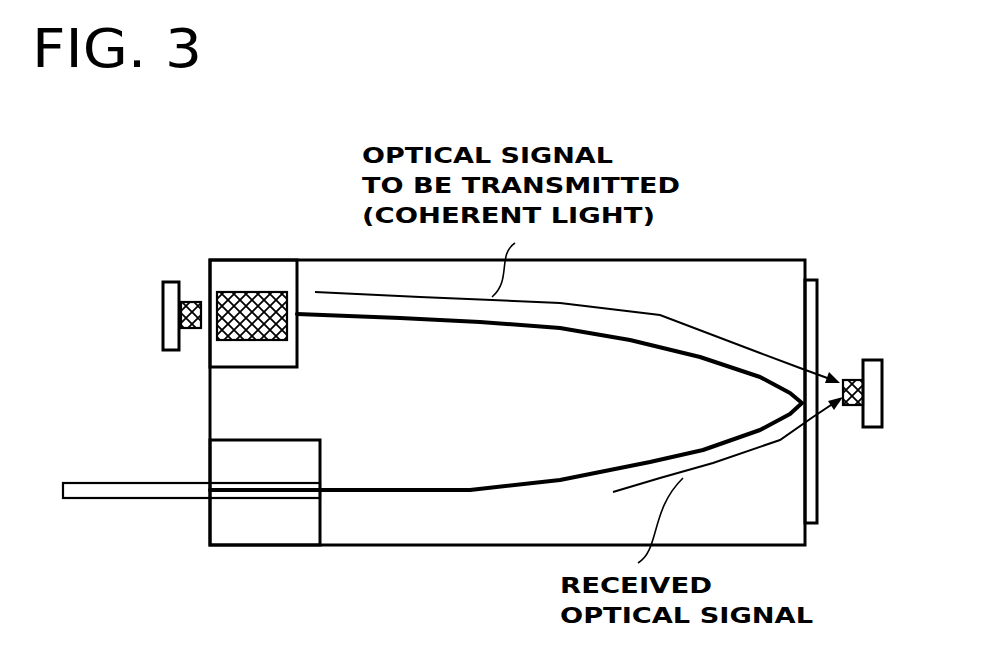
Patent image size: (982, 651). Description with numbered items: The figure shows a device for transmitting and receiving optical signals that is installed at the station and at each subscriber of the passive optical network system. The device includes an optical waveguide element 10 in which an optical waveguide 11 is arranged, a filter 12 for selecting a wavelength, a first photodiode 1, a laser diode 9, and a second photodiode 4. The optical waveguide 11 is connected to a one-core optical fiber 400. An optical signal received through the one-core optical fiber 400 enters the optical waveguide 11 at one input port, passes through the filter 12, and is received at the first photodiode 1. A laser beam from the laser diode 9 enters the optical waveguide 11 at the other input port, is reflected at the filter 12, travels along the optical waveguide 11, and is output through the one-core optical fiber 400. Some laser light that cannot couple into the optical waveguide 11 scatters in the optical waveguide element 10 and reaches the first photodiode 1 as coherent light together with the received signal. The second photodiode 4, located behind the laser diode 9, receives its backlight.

The first photodiode 1 is at (850, 380).
The second photodiode 4 is at (193, 302).
The laser diode 9 is at (250, 292).
The optical waveguide element 10 is at (683, 260).
The optical waveguide 11 is at (433, 490).
The filter 12 is at (818, 287).
The one-core optical fiber 400 is at (118, 483).